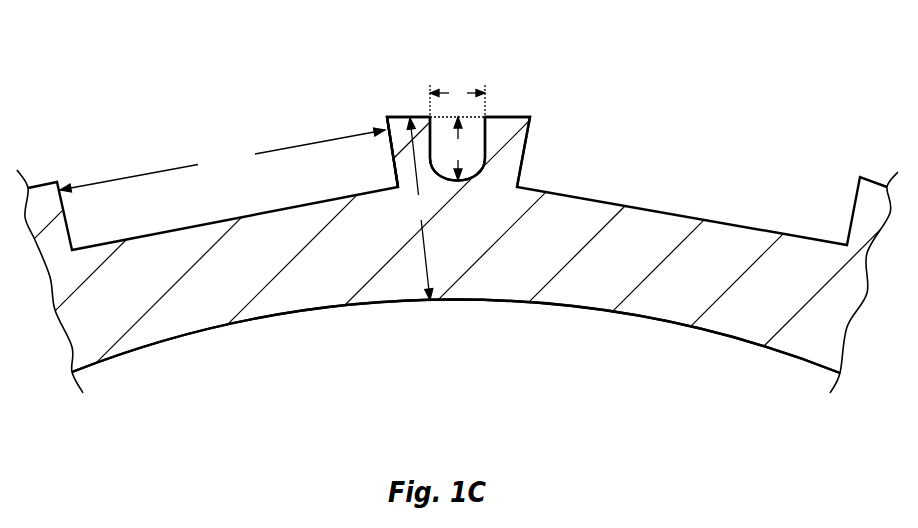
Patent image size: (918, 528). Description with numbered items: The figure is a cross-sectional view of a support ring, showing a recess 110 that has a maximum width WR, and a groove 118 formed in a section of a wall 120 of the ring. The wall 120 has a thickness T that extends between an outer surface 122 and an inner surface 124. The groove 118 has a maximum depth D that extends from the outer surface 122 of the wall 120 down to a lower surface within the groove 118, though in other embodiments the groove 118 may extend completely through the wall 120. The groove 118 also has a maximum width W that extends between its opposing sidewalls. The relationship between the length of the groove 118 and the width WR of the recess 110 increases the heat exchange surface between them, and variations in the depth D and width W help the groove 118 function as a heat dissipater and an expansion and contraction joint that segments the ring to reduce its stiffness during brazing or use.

The recess 110 is at (162, 150).
The groove 118 is at (481, 72).
The wall 120 is at (503, 116).
The outer surface 122 is at (400, 116).
The inner surface 124 is at (260, 320).